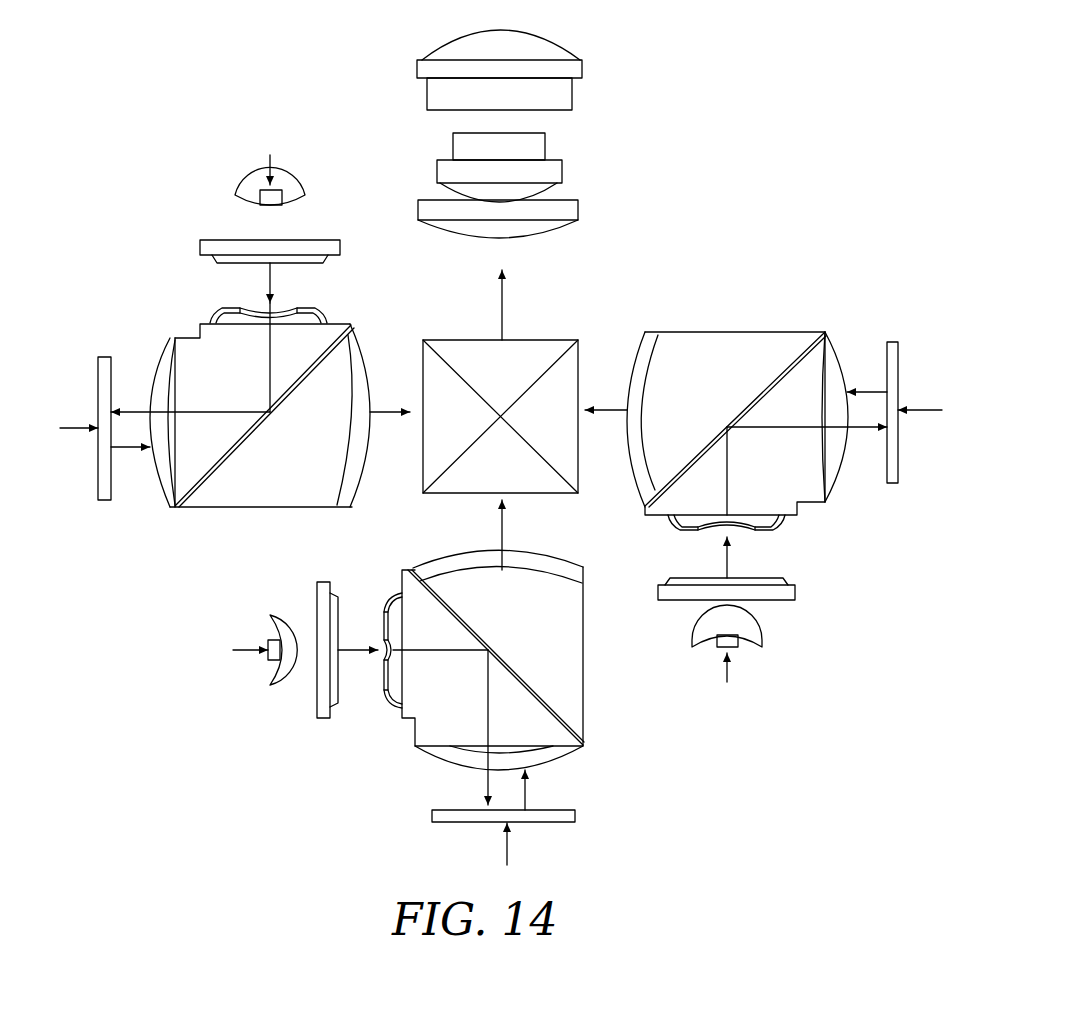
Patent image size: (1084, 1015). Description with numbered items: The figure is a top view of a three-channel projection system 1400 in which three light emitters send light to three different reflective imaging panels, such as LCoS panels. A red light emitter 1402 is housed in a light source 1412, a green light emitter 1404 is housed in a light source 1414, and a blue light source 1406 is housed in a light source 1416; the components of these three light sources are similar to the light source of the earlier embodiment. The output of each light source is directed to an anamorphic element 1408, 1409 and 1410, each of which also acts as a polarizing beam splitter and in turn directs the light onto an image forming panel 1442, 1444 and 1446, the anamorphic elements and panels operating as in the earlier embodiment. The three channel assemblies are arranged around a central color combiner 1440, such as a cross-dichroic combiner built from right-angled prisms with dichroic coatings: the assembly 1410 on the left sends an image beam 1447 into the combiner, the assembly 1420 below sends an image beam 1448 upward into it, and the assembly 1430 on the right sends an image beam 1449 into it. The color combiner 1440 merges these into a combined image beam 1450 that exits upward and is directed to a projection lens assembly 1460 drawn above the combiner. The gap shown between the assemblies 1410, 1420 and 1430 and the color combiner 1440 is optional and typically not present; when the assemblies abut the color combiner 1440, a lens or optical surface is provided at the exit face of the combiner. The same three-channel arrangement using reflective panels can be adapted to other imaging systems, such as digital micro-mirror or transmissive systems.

The three-channel projection system 1400 is at (667, 43).
The red light emitter 1402 is at (278, 189).
The green light emitter 1404 is at (266, 647).
The blue light source 1406 is at (715, 637).
The anamorphic element 1408 is at (323, 309).
The anamorphic element 1409 is at (394, 603).
The anamorphic element 1410 is at (200, 540).
The light source 1412 is at (242, 228).
The light source 1414 is at (297, 679).
The light source 1416 is at (768, 631).
The assembly 1420 is at (400, 768).
The assembly 1430 is at (823, 523).
The color combiner 1440 is at (468, 340).
The image forming panel 1442 is at (104, 356).
The image forming panel 1444 is at (575, 817).
The image forming panel 1446 is at (893, 342).
The image beam 1447 is at (385, 412).
The image beam 1448 is at (502, 535).
The image beam 1449 is at (612, 410).
The combined image beam 1450 is at (502, 307).
The projection lens assembly 1460 is at (597, 32).